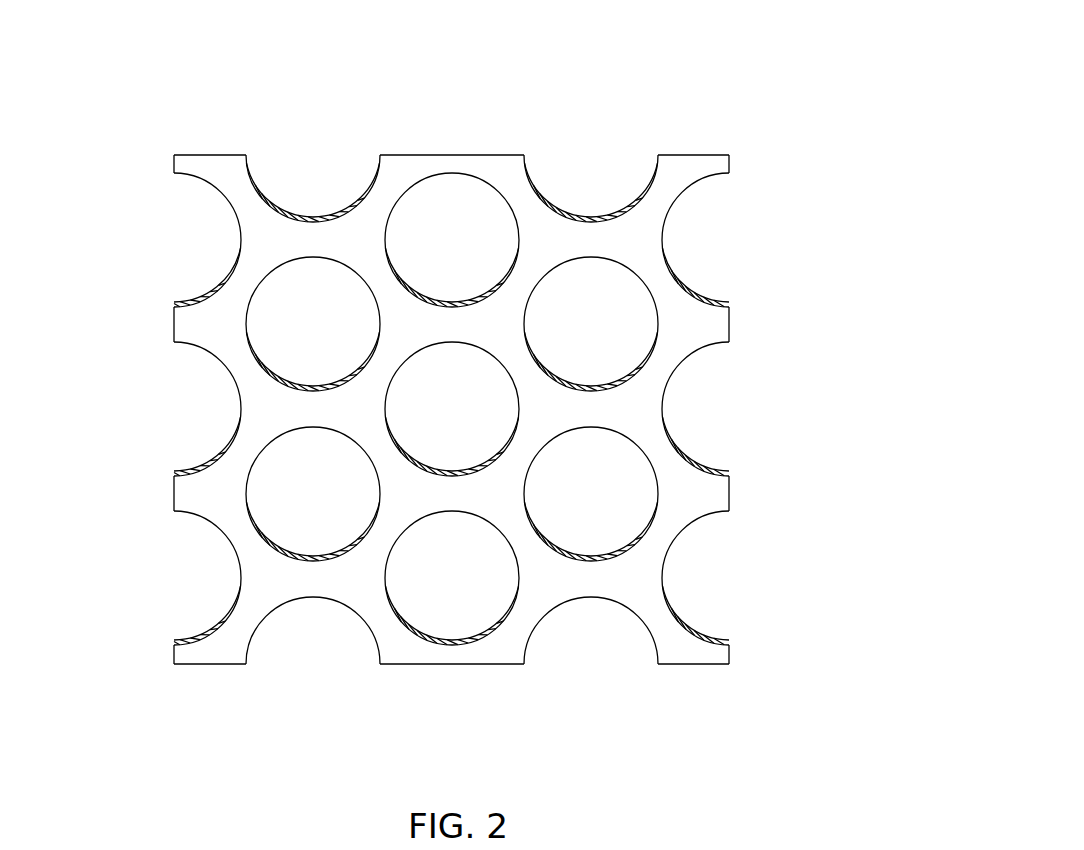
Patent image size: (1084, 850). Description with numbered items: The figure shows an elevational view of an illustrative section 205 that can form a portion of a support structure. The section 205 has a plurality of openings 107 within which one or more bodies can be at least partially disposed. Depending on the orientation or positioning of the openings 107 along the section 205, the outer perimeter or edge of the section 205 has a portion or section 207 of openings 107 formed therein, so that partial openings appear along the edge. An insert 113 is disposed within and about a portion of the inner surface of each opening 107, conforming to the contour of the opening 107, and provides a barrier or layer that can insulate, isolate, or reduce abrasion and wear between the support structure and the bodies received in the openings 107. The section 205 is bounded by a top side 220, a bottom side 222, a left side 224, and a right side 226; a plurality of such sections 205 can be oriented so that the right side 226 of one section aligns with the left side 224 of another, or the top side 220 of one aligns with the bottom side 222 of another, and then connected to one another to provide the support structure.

The section 205 is at (430, 379).
The top side 220 is at (213, 155).
The bottom side 222 is at (235, 666).
The left side 224 is at (174, 321).
The right side 226 is at (738, 324).
The portion of openings 207 is at (728, 239).
The openings 107 is at (330, 312).
The insert 113 is at (311, 216).